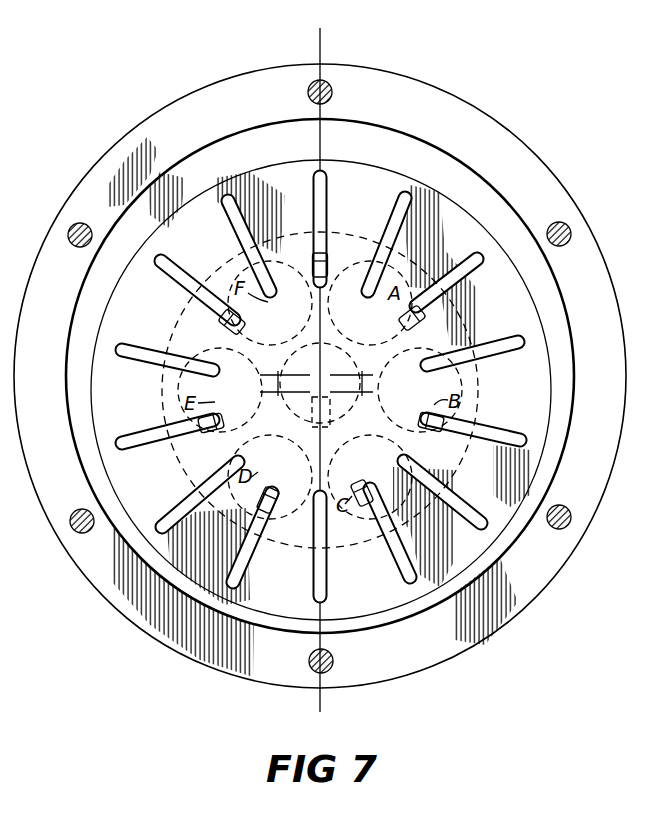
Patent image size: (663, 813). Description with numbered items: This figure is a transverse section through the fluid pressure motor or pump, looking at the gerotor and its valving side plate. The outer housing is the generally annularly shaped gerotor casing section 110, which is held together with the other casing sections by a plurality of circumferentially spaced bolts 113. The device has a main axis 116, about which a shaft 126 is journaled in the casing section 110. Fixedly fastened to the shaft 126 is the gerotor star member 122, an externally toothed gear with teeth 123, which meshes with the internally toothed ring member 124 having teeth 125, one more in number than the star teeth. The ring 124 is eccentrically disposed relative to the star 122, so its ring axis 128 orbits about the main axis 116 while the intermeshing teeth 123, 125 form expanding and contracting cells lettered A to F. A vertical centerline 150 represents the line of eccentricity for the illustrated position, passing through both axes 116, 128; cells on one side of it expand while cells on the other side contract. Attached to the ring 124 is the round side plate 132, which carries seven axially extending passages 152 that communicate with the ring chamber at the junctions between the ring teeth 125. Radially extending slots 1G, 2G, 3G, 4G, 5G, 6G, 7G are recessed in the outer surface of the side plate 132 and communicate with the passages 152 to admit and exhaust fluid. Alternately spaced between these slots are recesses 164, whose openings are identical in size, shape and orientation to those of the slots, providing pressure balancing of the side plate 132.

The gerotor casing section 110 is at (531, 152).
The bolts 113 is at (571, 228).
The vertical centerline 150 is at (322, 30).
The round plate 132 is at (380, 162).
The ring member 124 is at (462, 323).
The recesses 164 is at (383, 230).
The slot 1G is at (327, 186).
The slot 2G is at (172, 288).
The slot 3G is at (155, 428).
The slot 4G is at (243, 548).
The slot 5G is at (380, 548).
The slot 6G is at (498, 424).
The slot 7G is at (472, 276).
The passages 152 is at (328, 262).
The main axis 116 is at (322, 378).
The shaft 126 is at (298, 338).
The ring axis 128 is at (323, 393).
The teeth 125 is at (258, 512).
The teeth 123 is at (275, 442).
The star member 122 is at (406, 444).